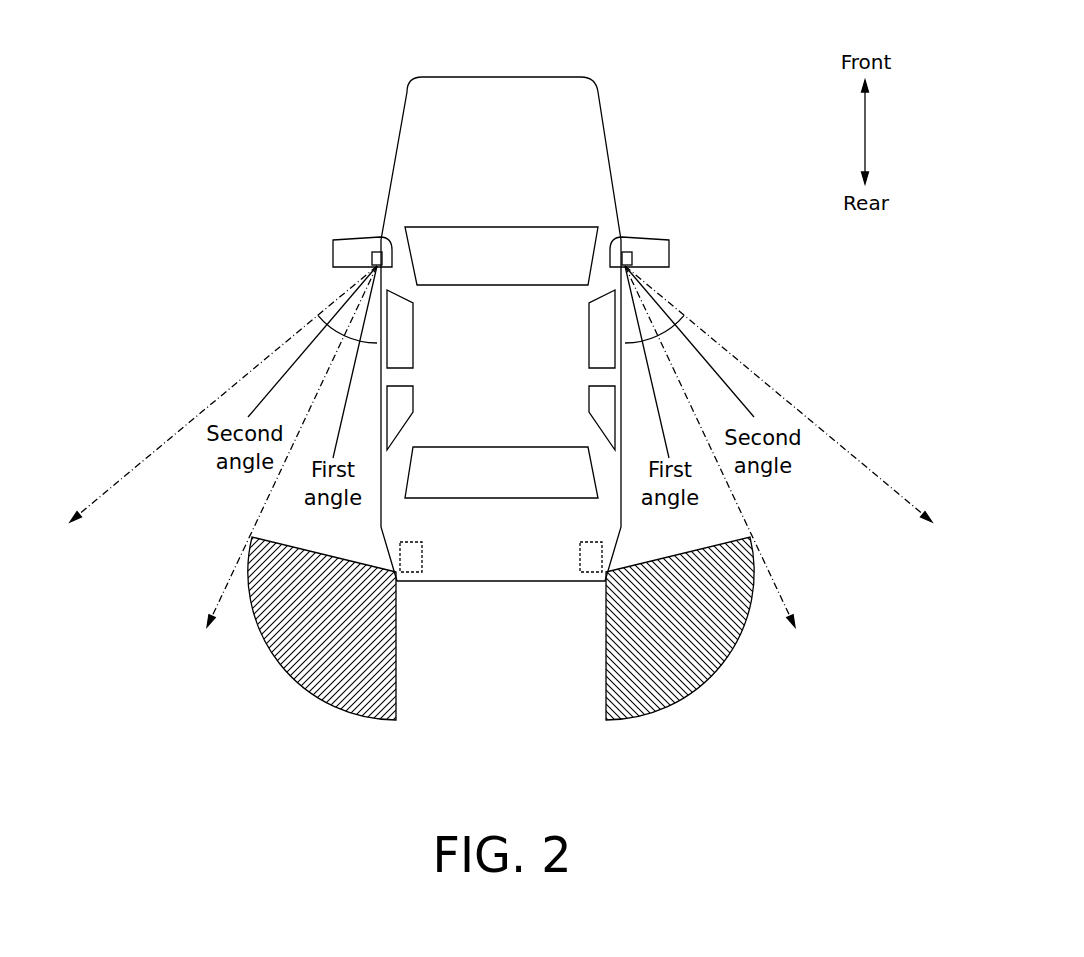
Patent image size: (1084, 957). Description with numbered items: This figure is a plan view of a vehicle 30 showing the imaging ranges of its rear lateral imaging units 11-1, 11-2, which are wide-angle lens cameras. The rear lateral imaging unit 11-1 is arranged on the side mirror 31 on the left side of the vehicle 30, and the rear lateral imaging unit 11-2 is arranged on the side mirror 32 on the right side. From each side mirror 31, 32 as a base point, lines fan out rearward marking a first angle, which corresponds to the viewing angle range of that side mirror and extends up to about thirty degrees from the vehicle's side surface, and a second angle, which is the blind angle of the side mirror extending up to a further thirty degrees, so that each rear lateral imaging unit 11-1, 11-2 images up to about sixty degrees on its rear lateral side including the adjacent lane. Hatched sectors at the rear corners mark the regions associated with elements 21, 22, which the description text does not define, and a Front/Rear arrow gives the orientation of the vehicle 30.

The vehicle 30 is at (503, 86).
The side mirror 31 is at (333, 245).
The side mirror 32 is at (669, 250).
The rear lateral imaging unit 11-1 is at (377, 251).
The rear lateral imaging unit 11-2 is at (628, 251).
The left rear sensor 21 is at (400, 558).
The right rear sensor 22 is at (602, 558).